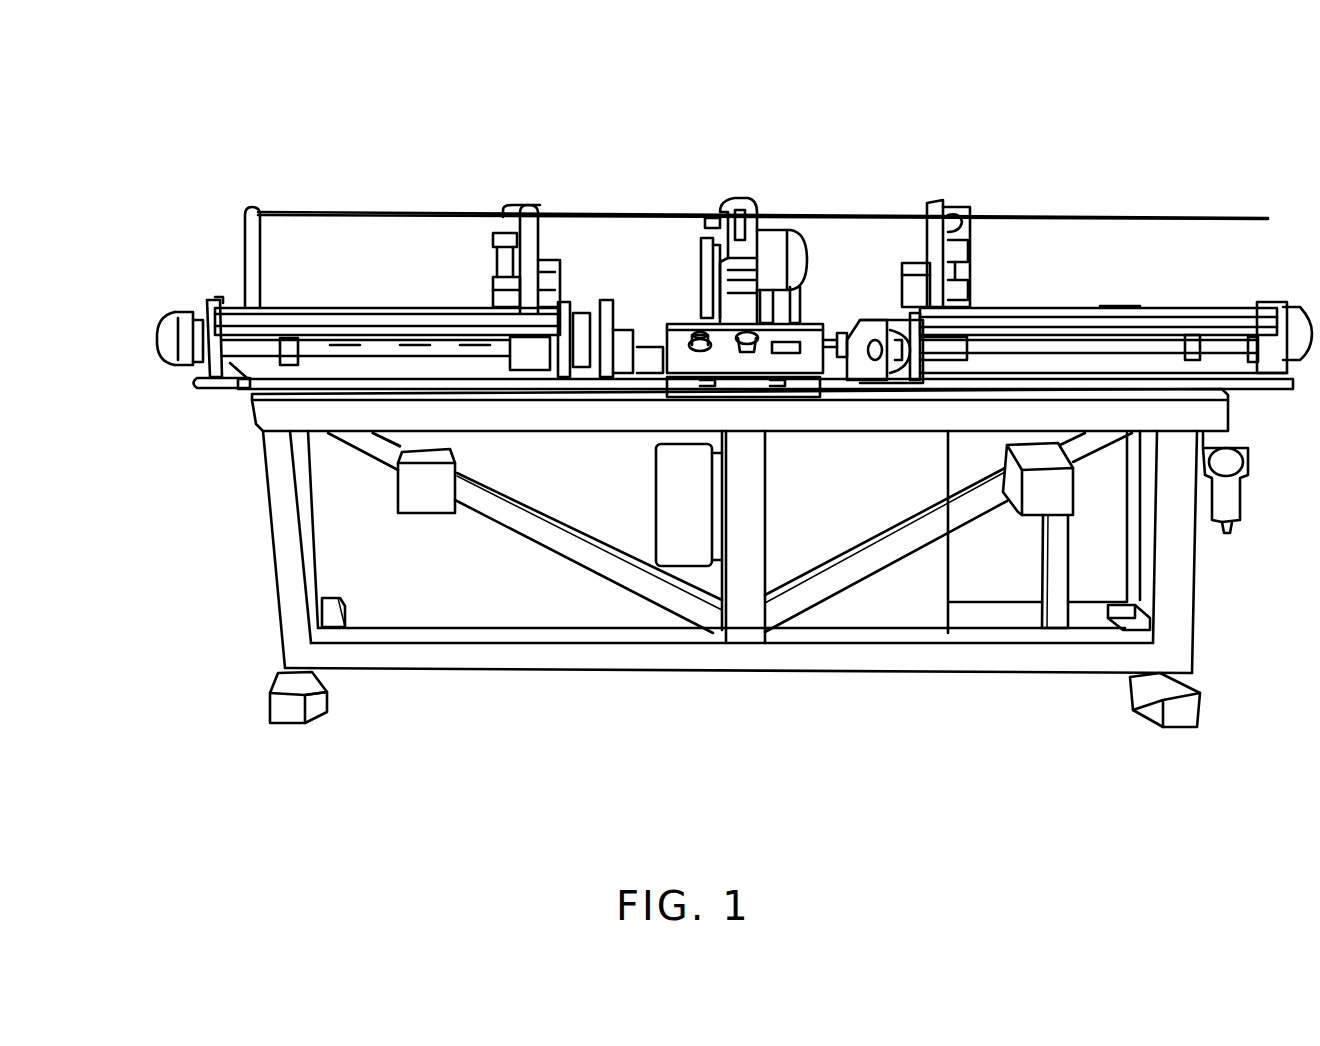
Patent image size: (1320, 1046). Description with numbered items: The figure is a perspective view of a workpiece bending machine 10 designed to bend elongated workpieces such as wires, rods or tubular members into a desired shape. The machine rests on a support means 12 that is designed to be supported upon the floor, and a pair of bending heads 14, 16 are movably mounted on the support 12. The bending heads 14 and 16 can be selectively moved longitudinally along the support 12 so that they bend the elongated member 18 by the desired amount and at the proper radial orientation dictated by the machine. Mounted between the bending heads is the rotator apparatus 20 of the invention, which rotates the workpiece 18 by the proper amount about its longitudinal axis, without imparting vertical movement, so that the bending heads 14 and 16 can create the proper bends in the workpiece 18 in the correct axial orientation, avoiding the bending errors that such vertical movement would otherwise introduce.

The workpiece bending machine 10 is at (1058, 168).
The support means 12 is at (263, 565).
The bending head 14 is at (513, 184).
The bending head 16 is at (951, 180).
The elongated member 18 is at (623, 210).
The rotator apparatus 20 is at (757, 185).